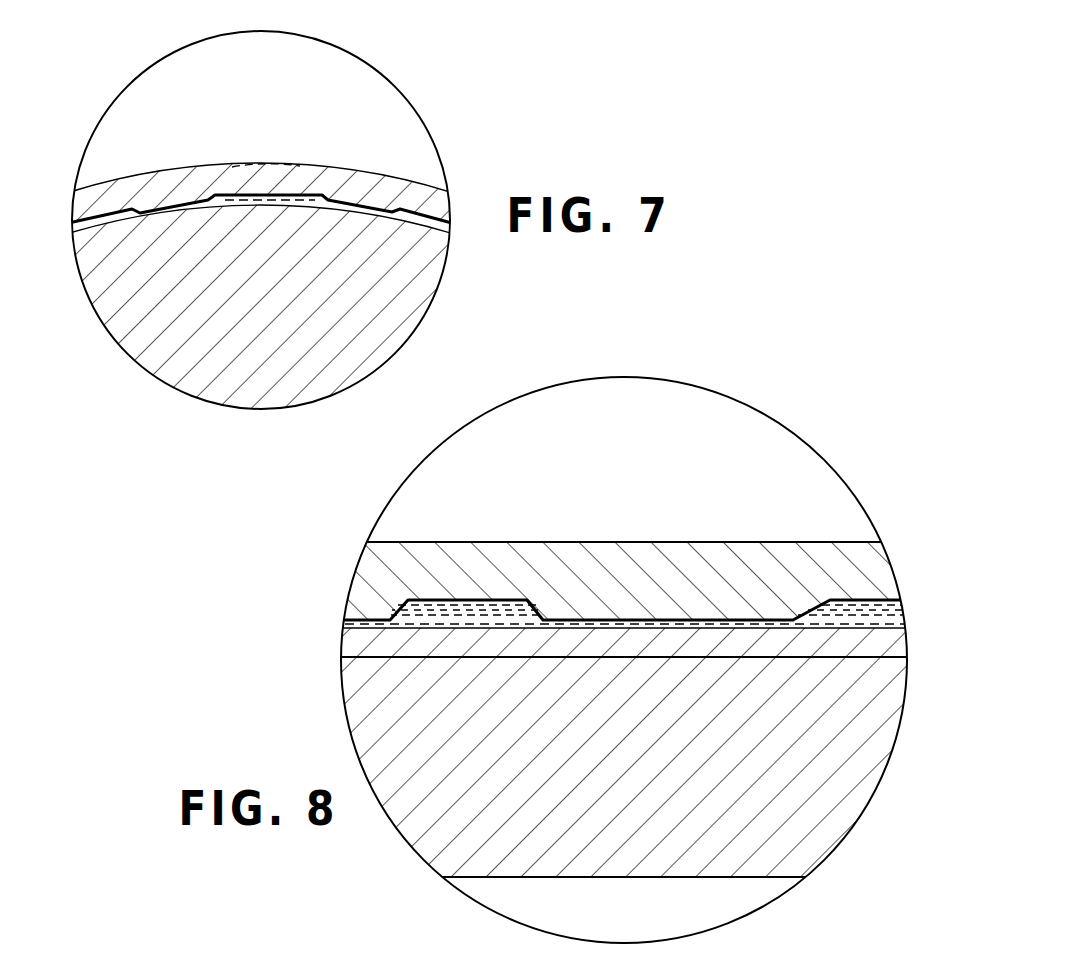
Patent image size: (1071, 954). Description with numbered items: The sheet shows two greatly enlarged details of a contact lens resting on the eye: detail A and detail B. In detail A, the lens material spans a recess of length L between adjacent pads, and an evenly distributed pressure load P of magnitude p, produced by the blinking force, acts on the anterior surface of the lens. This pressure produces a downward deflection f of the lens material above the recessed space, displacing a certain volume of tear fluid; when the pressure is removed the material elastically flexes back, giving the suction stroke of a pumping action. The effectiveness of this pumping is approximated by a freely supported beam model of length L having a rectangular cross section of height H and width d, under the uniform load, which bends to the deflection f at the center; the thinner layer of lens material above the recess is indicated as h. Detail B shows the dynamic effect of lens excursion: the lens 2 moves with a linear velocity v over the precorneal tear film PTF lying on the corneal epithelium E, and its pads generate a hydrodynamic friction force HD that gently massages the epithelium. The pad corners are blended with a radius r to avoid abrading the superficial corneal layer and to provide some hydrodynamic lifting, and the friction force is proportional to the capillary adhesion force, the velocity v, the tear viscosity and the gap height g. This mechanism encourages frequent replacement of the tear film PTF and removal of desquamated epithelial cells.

In FIG. 7, the detail A is at (393, 85).
In FIG. 8, the detail B is at (718, 392).
In FIG. 8, the slider 2 is at (372, 570).
In FIG. 8, the precorneal tear film PTF is at (355, 622).
In FIG. 8, the corneal epithelium E is at (358, 640).
In FIG. 7, the pressure load P is at (452, 109).
In FIG. 7, the beam width d is at (397, 213).
In FIG. 7, the beam height H is at (32, 160).
In FIG. 7, the layer thickness h is at (95, 196).
In FIG. 7, the deflection f is at (265, 208).
In FIG. 7, the recess span L is at (323, 195).
In FIG. 8, the linear velocity v is at (732, 488).
In FIG. 8, the gap height g is at (606, 662).
In FIG. 8, the pad corner radius r is at (793, 573).
In FIG. 8, the hydrodynamic friction force HD is at (786, 624).